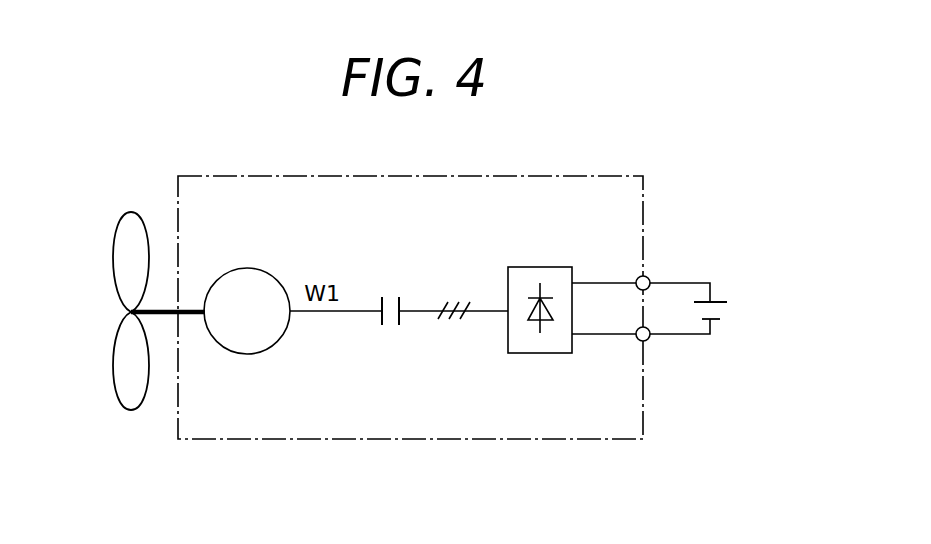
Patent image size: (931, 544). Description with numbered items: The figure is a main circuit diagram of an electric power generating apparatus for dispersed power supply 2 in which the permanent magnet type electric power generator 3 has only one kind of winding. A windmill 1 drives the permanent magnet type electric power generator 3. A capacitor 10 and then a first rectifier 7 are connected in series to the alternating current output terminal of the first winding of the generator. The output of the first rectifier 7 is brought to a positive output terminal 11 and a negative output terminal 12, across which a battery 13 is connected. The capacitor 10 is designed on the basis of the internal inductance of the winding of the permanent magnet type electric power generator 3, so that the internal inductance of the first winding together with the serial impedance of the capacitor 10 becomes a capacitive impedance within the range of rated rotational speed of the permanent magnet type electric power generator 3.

The windmill 1 is at (132, 395).
The electric power generating apparatus for dispersed power supply 2 is at (572, 440).
The permanent magnet type electric power generator 3 is at (245, 268).
The first rectifier 7 is at (540, 267).
The capacitor 10 is at (391, 295).
The positive output terminal 11 is at (649, 279).
The negative output terminal 12 is at (649, 339).
The battery 13 is at (730, 311).